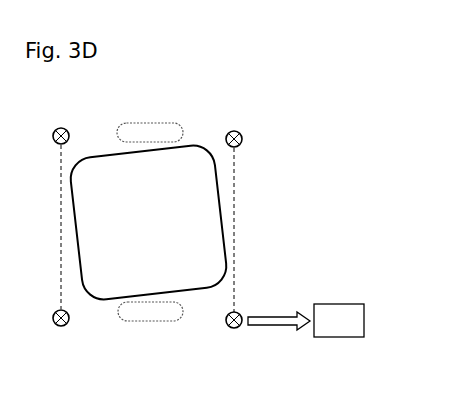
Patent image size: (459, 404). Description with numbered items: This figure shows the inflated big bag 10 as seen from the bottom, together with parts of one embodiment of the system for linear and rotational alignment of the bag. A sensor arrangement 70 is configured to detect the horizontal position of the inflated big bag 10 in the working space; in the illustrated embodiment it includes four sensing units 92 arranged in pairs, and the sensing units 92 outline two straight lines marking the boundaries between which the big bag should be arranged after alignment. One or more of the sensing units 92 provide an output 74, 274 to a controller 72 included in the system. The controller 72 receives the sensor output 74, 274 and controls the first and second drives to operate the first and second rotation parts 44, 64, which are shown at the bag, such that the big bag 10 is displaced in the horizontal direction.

The inflated big bag 10 is at (203, 141).
The first rotation part 44 is at (147, 120).
The second rotation part 64 is at (148, 323).
The sensor arrangement 70 is at (208, 228).
The sensing units 92 is at (243, 137).
The controller 72 is at (345, 304).
The output 74 is at (285, 348).
The output 274 is at (270, 327).